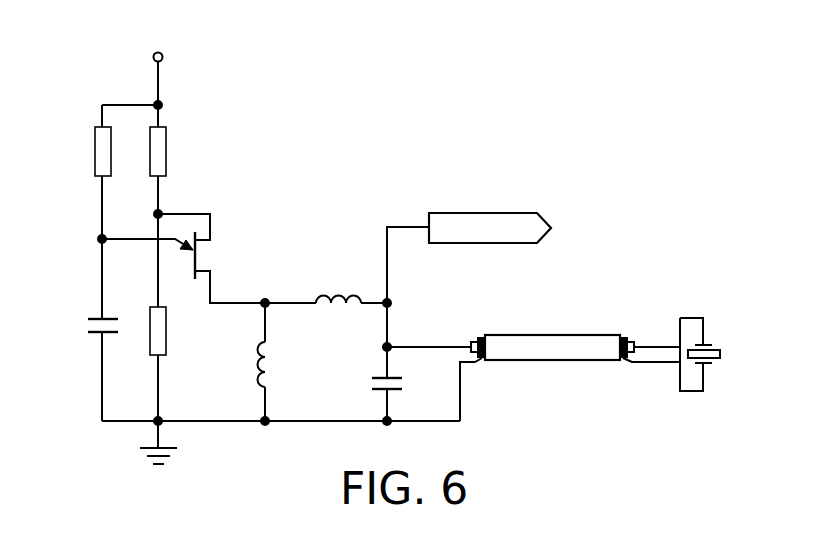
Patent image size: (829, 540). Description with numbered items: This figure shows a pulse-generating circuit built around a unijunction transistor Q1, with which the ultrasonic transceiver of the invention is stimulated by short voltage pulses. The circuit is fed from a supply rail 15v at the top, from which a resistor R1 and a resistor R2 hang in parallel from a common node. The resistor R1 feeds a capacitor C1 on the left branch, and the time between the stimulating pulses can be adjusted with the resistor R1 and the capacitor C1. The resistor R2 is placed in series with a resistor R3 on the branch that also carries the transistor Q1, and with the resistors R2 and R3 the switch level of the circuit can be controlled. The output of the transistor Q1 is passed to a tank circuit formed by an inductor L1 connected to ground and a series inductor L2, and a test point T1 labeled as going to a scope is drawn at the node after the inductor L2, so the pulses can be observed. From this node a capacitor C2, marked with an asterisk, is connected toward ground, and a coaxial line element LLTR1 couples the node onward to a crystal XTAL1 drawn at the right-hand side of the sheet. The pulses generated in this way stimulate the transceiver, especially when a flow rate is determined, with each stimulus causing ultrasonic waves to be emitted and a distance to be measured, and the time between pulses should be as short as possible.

The 15 volt supply 15v is at (160, 66).
The resistor R1 is at (70, 172).
The resistor R2 is at (181, 159).
The resistor R3 is at (181, 317).
The capacitor C1 is at (74, 328).
The capacitor C2 is at (405, 362).
The inductor L1 10uH L1 is at (290, 362).
The inductor L2 22uH L2 is at (326, 268).
The JFET transistor Q1 is at (183, 258).
The test point T1 to scope T1 is at (469, 244).
The transmission line resonator LLTR1 is at (533, 365).
The crystal XTAL1 1.4MHz XTAL1 is at (740, 354).